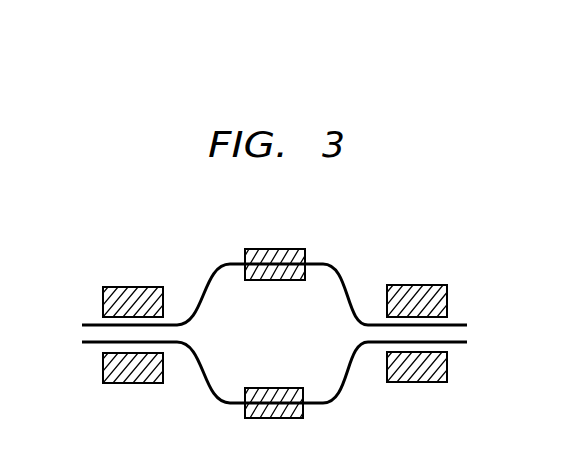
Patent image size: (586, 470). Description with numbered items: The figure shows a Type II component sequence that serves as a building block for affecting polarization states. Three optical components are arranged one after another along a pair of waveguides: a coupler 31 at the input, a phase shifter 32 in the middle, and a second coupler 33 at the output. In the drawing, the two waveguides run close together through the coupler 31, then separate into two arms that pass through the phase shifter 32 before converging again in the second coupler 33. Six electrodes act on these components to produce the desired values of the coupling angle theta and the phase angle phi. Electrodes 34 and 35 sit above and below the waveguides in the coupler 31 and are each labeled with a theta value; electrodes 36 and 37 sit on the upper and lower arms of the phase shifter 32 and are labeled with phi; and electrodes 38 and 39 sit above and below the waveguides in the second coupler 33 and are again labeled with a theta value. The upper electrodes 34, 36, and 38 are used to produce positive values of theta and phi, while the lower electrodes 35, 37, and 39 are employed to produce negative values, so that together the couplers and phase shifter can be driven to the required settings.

The coupler 31 is at (97, 320).
The phase shifter 32 is at (320, 262).
The second coupler 33 is at (378, 320).
The electrode 34 is at (110, 287).
The electrode 35 is at (110, 382).
The electrode 36 is at (248, 252).
The electrode 37 is at (253, 418).
The electrode 38 is at (437, 285).
The electrode 39 is at (435, 382).